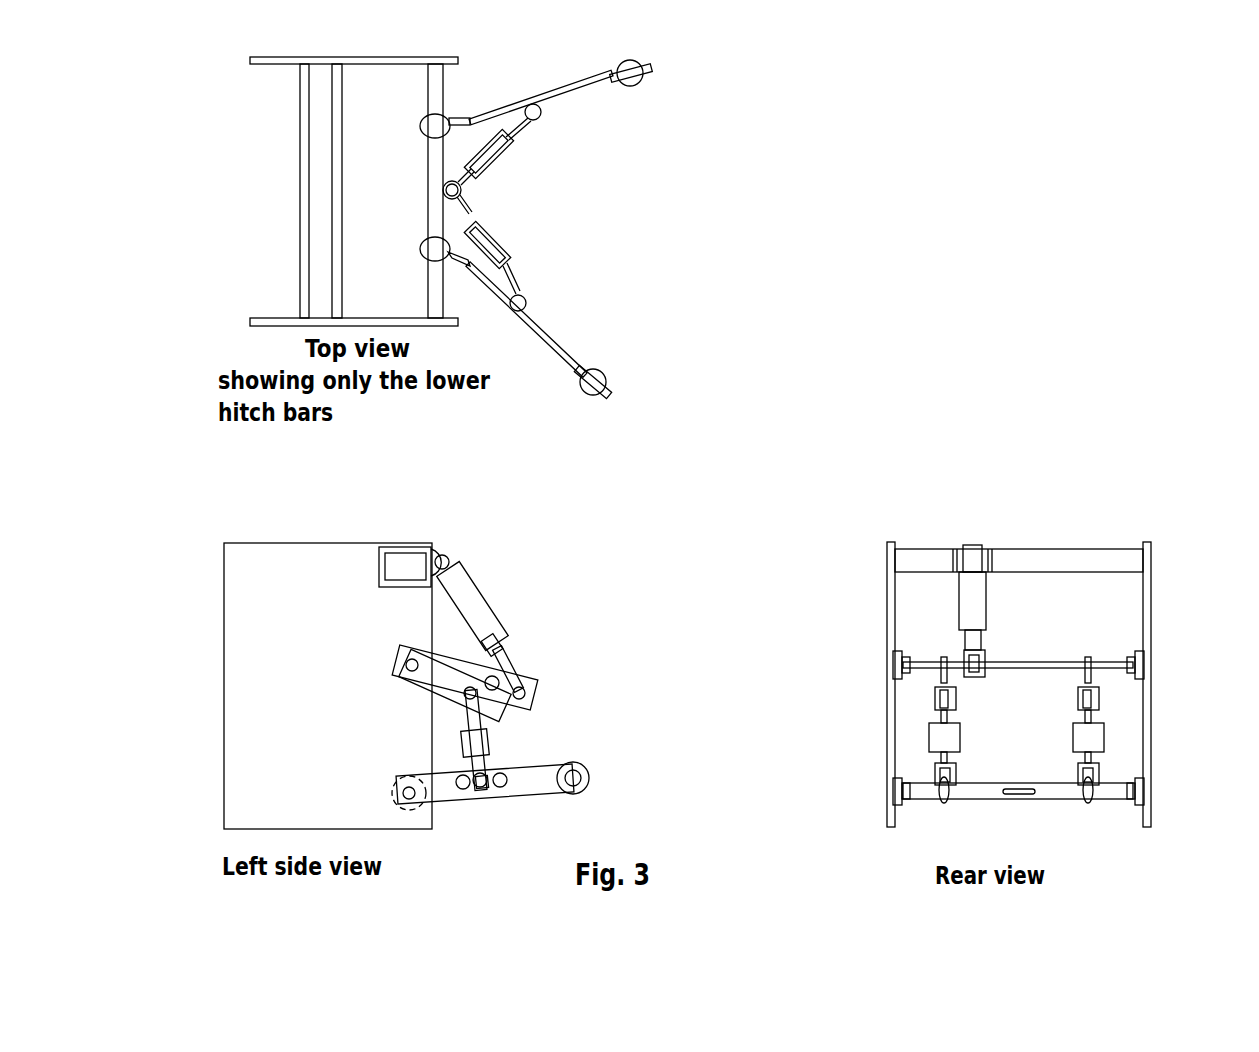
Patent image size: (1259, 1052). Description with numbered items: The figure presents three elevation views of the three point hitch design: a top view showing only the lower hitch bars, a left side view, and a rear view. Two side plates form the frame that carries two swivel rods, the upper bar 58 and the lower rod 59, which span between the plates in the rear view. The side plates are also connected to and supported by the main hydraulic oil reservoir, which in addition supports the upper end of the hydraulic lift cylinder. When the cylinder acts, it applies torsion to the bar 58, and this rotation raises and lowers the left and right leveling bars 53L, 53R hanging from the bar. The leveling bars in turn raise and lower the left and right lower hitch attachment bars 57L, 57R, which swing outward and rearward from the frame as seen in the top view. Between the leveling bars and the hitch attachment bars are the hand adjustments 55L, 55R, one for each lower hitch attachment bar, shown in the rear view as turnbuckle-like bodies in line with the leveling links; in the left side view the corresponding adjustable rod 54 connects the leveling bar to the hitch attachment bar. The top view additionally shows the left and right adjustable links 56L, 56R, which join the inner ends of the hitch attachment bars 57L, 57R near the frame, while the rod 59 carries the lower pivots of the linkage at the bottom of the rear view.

The left leveling bar 53L is at (944, 676).
The right leveling bar 53R is at (1088, 678).
The adjustable rod 54 is at (538, 686).
The left hand adjustment 55L is at (931, 737).
The right hand adjustment 55R is at (1104, 736).
The left adjustable link 56L is at (520, 242).
The right adjustable link 56R is at (495, 162).
The left hitch attachment bar 57L is at (548, 345).
The right hitch attachment bar 57R is at (577, 86).
The swivel rod / torsion bar 58 is at (1057, 660).
The swivel rod 59 is at (1053, 792).